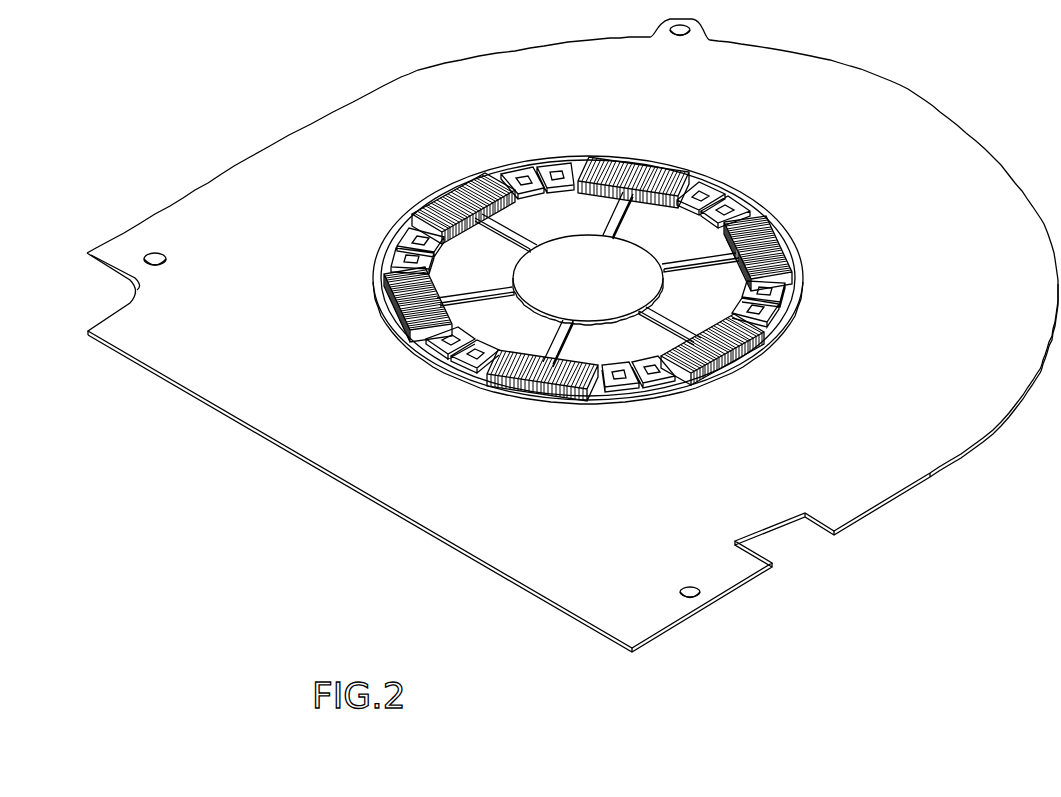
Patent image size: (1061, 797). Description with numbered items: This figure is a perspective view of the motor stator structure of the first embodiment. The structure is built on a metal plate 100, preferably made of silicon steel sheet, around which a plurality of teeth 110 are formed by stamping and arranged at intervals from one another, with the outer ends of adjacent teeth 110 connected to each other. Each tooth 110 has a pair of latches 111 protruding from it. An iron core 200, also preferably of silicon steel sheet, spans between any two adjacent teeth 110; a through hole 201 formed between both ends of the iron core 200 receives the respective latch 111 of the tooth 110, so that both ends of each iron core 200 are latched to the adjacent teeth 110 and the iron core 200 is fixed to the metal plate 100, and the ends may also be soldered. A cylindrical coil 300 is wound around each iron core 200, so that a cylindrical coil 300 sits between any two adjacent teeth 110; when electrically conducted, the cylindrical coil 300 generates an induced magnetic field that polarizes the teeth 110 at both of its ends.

The metal plate 100 is at (927, 103).
The tooth 110 is at (705, 275).
The latch 111 is at (731, 206).
The iron core 200 is at (755, 201).
The through hole 201 is at (744, 200).
The cylindrical coil 300 is at (757, 247).